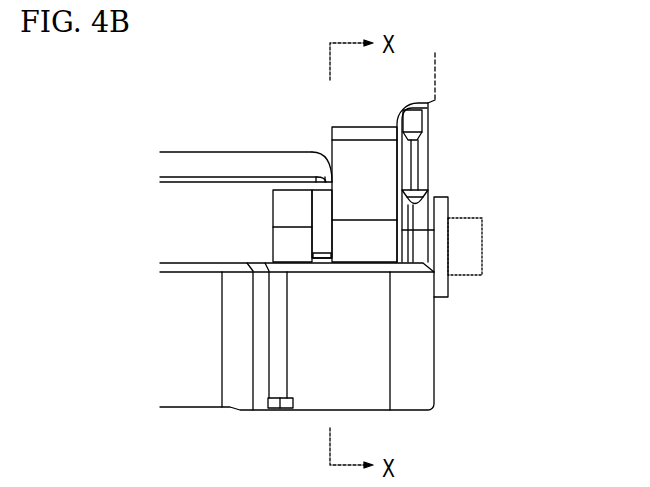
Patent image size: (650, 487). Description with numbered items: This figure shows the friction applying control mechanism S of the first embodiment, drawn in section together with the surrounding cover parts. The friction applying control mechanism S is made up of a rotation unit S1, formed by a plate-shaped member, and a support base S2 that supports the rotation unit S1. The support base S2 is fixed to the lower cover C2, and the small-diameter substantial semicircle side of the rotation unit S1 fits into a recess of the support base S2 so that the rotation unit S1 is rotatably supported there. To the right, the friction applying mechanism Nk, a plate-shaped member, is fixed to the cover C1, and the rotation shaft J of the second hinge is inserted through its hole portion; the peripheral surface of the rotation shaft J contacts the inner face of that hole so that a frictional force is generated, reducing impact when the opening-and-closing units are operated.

The friction applying control mechanism S is at (318, 186).
The rotation unit S1 is at (322, 190).
The support base S2 is at (273, 243).
The cover C1 is at (437, 73).
The lower cover C2 is at (436, 346).
The friction applying mechanism Nk is at (450, 198).
The rotation shaft J is at (483, 247).